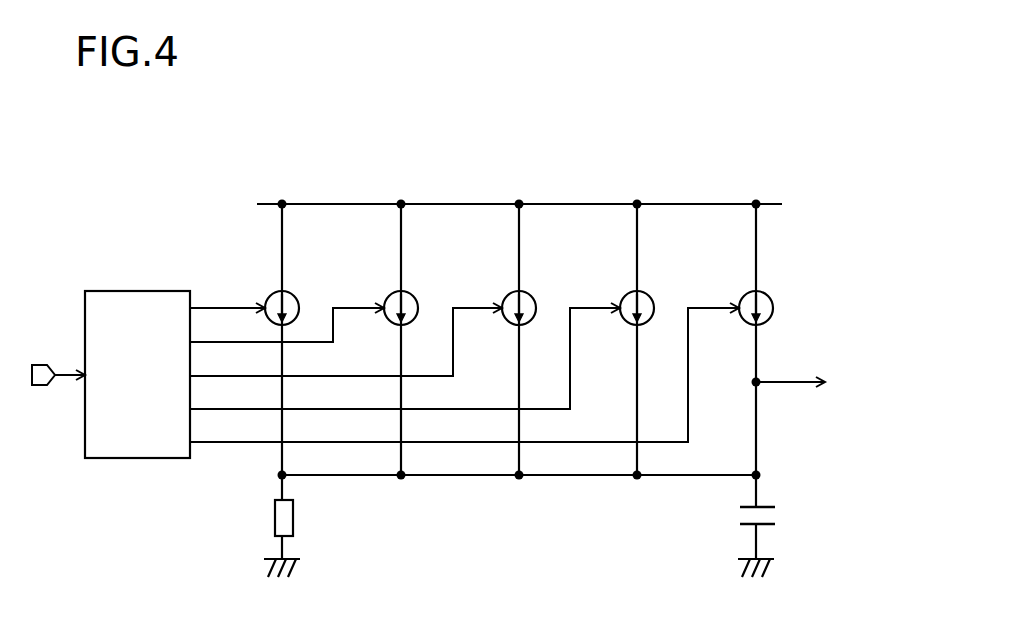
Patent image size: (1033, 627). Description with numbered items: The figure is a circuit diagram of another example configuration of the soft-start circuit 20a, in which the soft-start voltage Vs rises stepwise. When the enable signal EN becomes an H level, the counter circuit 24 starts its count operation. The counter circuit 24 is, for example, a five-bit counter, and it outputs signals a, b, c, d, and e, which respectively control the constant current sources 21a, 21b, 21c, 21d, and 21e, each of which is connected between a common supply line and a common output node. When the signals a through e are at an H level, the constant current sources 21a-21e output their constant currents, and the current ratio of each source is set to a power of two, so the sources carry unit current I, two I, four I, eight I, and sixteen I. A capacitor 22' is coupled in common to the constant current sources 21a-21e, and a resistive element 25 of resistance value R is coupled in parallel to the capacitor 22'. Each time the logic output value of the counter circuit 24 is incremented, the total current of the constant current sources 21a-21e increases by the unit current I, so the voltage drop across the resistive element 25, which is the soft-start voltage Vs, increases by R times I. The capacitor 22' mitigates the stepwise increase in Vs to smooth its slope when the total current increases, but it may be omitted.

The soft-start circuit 20a is at (692, 137).
The counter circuit 24 is at (142, 291).
The constant current source 21a is at (273, 294).
The constant current source 21b is at (391, 294).
The constant current source 21c is at (509, 294).
The constant current source 21d is at (627, 294).
The constant current source 21e is at (747, 294).
The resistive element 25 is at (270, 520).
The capacitor 22' is at (731, 526).